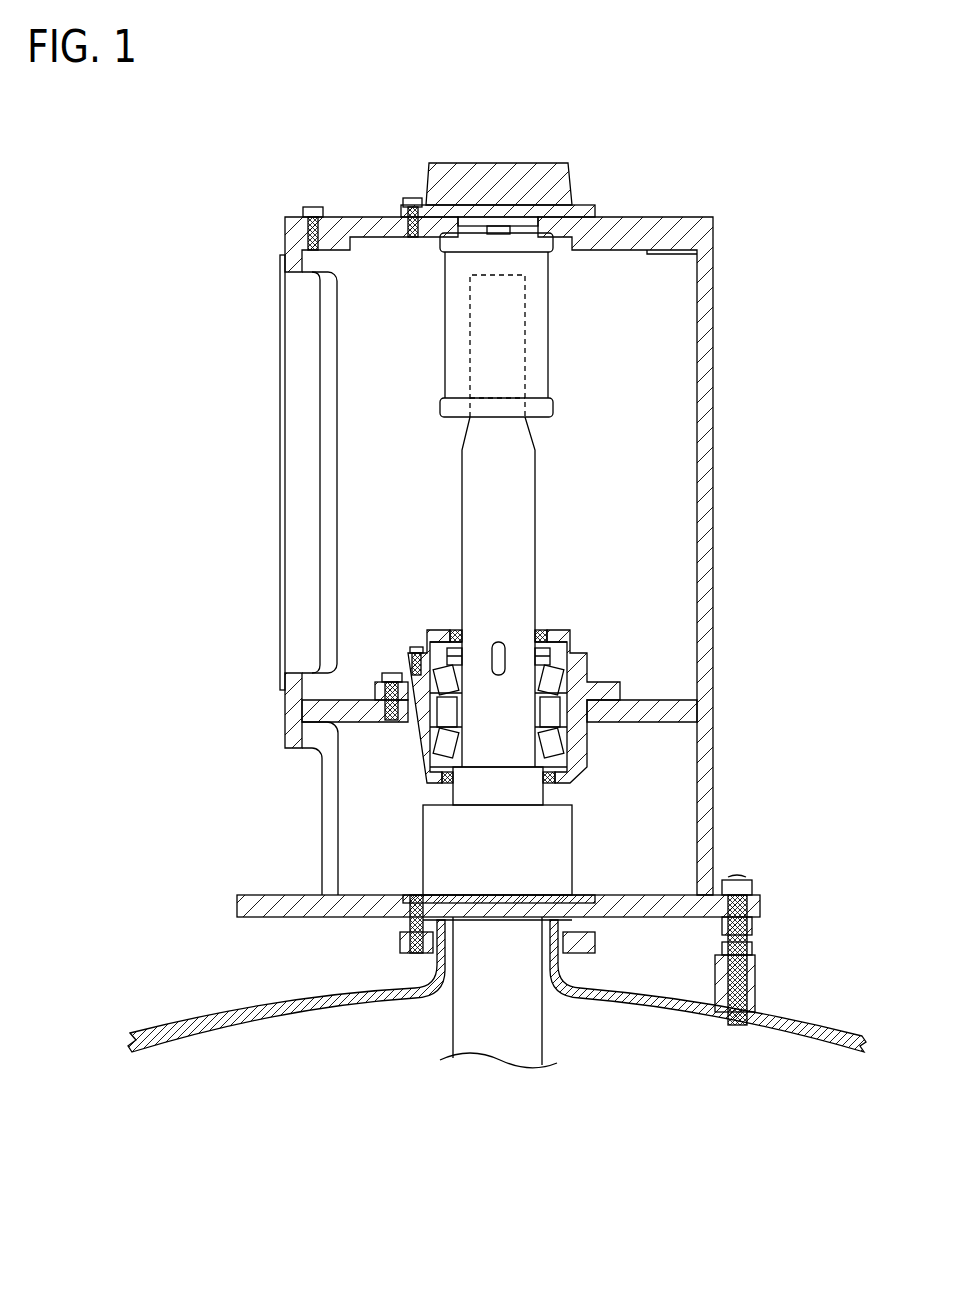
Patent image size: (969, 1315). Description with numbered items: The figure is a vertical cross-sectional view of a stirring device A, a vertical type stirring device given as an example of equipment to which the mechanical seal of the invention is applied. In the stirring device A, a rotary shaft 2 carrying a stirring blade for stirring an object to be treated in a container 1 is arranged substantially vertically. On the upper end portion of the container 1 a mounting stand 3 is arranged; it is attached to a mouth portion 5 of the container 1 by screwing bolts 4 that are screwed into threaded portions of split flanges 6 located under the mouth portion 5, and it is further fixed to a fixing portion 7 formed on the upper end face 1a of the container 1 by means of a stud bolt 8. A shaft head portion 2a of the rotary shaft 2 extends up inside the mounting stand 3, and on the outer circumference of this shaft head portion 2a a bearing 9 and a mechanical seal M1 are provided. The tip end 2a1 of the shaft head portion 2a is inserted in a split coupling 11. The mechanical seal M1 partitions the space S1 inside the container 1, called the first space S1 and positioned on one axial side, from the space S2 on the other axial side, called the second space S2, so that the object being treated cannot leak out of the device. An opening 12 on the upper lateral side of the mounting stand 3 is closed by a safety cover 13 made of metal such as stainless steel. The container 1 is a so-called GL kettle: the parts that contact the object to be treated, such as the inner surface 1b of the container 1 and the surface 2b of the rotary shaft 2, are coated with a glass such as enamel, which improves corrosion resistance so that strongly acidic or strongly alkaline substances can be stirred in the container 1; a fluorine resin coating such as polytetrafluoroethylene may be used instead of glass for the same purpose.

The container 1 is at (200, 1020).
The upper end face 1a is at (830, 1030).
The inner surface 1b is at (240, 1027).
The rotary shaft 2 is at (467, 1015).
The shaft head portion 2a is at (523, 522).
The tip end 2a1 is at (527, 331).
The surface of the rotary shaft 2b is at (545, 1040).
The mounting stand 3 is at (713, 527).
The screwing bolt 4 is at (410, 923).
The mouth portion 5 is at (597, 918).
The split flange 6 is at (595, 950).
The fixing portion 7 is at (755, 975).
The stud bolt 8 is at (734, 877).
The bearing 9 is at (580, 653).
The split coupling 11 is at (550, 306).
The opening 12 is at (302, 365).
The safety cover 13 is at (280, 430).
The stirring device A is at (226, 748).
The mechanical seal M1 is at (572, 843).
The first space S1 is at (320, 1115).
The second space S2 is at (398, 818).